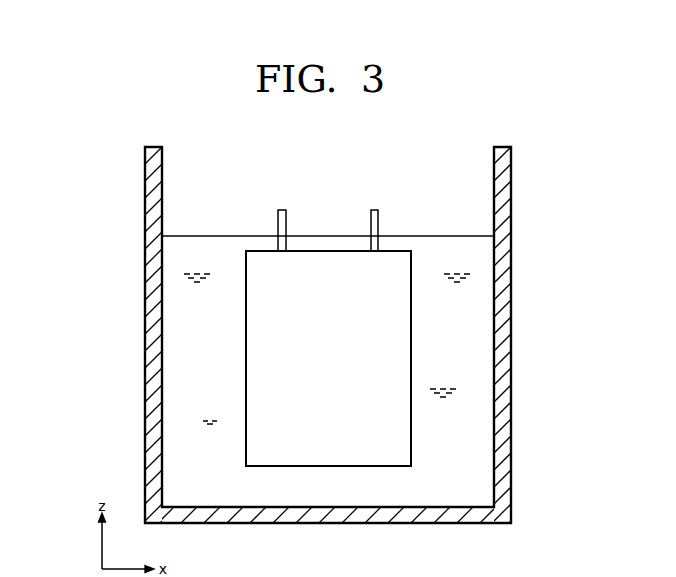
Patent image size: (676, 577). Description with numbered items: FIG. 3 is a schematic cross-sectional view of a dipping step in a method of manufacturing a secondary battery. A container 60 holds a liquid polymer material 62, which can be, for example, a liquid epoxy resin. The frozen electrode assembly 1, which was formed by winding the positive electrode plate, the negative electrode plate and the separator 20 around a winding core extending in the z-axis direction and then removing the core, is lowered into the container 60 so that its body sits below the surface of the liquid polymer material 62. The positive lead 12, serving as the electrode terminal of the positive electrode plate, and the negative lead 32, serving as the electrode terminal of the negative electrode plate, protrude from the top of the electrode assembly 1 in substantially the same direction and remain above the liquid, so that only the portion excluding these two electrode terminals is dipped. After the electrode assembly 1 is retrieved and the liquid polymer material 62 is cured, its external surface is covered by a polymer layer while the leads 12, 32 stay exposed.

The electrode assembly 1 is at (245, 312).
The positive lead 12 is at (281, 210).
The separator 20 is at (262, 322).
The negative lead 32 is at (374, 210).
The container 60 is at (154, 194).
The liquid polymer material 62 is at (180, 262).